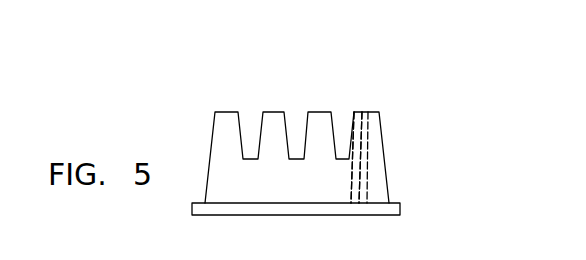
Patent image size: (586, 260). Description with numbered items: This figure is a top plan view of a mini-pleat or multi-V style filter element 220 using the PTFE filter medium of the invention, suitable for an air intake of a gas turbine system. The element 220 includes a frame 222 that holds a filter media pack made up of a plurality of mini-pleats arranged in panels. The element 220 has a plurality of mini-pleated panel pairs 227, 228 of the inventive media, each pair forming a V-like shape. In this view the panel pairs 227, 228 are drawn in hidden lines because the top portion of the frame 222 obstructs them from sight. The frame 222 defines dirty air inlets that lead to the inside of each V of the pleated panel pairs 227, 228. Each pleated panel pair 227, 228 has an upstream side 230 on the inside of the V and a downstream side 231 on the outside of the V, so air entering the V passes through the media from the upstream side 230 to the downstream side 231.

The mini-pleat or multi-V style element 220 is at (410, 102).
The frame 222 is at (388, 192).
The mini-pleated panel pair 227 is at (382, 138).
The mini-pleated panel pair 228 is at (360, 130).
The upstream side 230 is at (364, 188).
The downstream side 231 is at (385, 165).